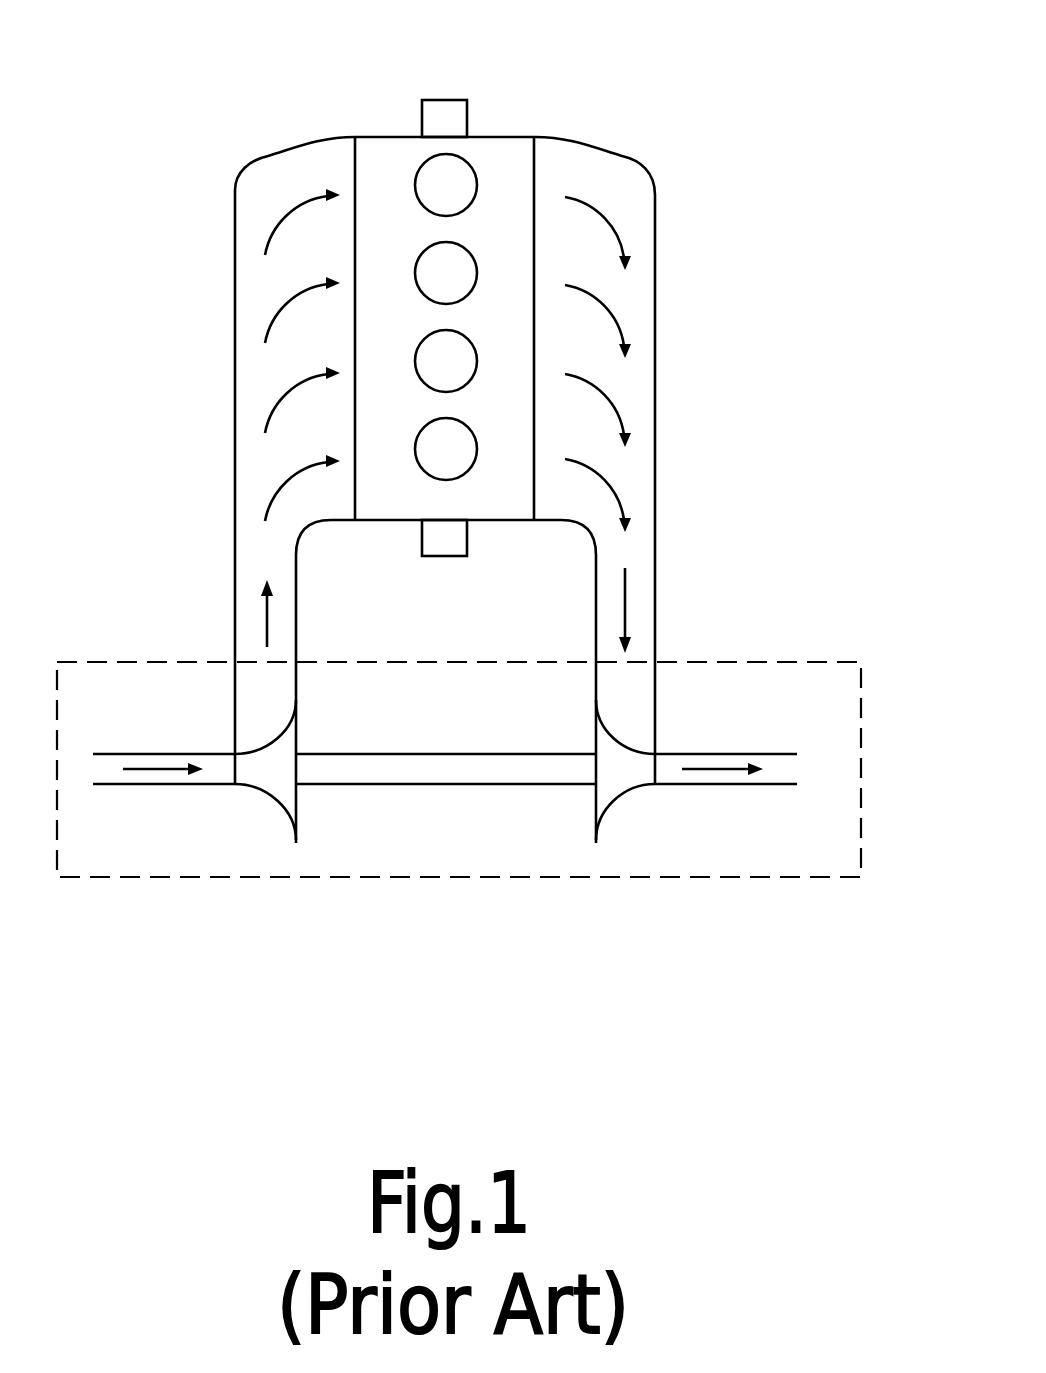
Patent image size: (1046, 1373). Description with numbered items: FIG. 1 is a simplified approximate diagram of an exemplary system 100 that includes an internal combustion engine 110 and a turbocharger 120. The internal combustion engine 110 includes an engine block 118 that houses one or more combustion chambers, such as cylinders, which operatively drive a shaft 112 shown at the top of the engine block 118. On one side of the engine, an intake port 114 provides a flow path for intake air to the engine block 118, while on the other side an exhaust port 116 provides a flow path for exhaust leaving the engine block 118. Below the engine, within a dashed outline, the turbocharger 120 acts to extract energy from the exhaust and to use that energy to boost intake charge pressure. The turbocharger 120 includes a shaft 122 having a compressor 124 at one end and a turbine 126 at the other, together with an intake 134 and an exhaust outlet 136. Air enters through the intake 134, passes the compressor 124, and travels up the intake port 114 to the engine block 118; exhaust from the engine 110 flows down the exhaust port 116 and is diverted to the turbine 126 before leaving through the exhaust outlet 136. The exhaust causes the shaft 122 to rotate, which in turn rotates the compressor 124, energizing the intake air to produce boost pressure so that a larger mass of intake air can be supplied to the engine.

The system 100 is at (652, 36).
The internal combustion engine 110 is at (398, 137).
The shaft 112 is at (445, 99).
The intake port 114 is at (258, 157).
The exhaust port 116 is at (647, 173).
The engine block 118 is at (469, 511).
The turbocharger 120 is at (727, 662).
The shaft 122 is at (445, 786).
The compressor 124 is at (298, 723).
The turbine 126 is at (595, 723).
The intake 134 is at (187, 754).
The exhaust outlet 136 is at (732, 754).